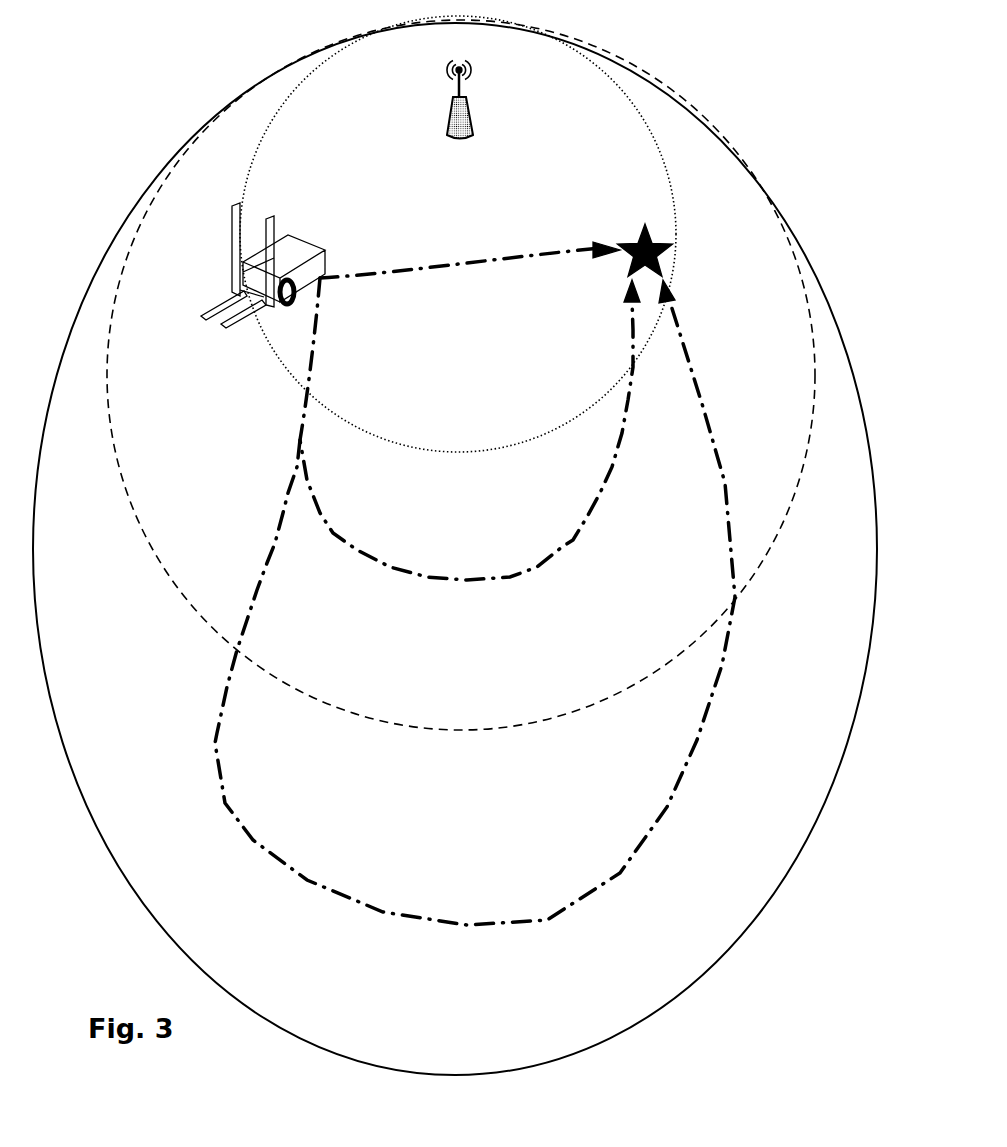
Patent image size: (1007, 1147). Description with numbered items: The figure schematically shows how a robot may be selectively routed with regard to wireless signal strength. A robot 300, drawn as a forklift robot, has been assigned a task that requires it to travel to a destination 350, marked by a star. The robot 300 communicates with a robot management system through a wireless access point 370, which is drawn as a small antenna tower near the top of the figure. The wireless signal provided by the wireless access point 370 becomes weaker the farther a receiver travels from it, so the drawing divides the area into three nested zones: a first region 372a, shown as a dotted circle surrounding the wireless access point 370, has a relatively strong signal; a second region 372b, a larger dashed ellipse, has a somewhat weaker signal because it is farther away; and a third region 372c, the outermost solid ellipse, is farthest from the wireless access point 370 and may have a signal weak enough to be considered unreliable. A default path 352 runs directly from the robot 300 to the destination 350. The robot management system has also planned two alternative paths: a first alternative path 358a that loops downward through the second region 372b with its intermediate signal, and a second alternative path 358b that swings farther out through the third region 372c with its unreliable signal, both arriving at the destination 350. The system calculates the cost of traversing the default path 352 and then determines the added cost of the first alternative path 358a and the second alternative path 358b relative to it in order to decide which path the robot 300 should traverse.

The robot 300 is at (356, 239).
The destination 350 is at (658, 270).
The default path 352 is at (430, 279).
The first alternative path 358a is at (565, 545).
The second alternative path 358b is at (647, 837).
The wireless access point 370 is at (471, 132).
The first region 372a is at (458, 234).
The second region 372b is at (461, 375).
The third region 372c is at (455, 549).